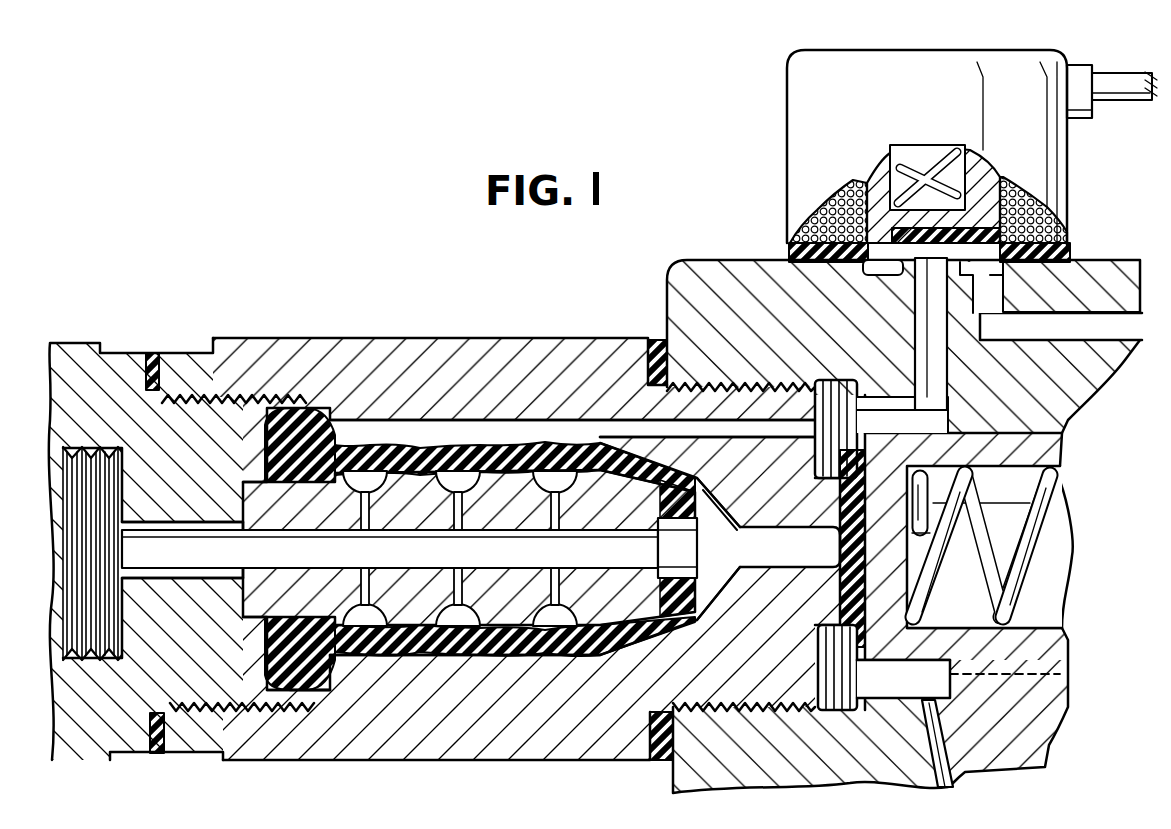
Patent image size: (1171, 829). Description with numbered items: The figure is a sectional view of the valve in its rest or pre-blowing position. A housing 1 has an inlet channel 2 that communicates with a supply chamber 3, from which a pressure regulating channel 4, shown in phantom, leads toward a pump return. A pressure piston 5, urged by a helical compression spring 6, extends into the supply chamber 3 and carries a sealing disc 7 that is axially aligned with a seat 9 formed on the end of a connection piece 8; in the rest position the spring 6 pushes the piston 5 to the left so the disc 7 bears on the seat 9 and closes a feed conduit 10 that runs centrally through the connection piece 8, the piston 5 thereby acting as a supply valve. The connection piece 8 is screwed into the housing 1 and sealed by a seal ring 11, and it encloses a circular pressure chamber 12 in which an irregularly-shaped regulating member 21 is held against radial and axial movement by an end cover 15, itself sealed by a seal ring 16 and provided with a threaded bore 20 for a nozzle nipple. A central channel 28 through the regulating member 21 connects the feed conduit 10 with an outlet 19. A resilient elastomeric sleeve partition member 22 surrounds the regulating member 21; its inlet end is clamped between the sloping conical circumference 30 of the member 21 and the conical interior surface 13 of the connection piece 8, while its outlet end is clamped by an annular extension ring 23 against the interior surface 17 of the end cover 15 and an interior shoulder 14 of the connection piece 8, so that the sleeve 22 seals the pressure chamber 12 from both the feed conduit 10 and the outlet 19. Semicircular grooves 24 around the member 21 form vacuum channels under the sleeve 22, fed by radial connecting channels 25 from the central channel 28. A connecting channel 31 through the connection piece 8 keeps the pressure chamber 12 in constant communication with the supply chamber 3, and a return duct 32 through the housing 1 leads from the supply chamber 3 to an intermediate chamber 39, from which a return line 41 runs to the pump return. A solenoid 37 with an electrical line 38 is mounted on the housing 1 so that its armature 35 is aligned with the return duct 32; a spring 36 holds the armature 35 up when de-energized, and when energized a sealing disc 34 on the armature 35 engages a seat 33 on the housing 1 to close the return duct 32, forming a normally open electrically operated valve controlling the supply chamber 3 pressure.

The housing 1 is at (747, 773).
The inlet channel 2 is at (953, 757).
The supply chamber 3 is at (937, 677).
The pressure regulating channel 4 is at (1060, 675).
The pressure piston 5 is at (1050, 640).
The helical compression spring 6 is at (1010, 590).
The sealing disc 7 is at (853, 497).
The connection piece 8 is at (740, 587).
The seat 9 is at (840, 603).
The feed conduit 10 is at (773, 550).
The seal ring 11 is at (663, 747).
The pressure chamber 12 is at (570, 667).
The sloping conical interior surface 13 is at (633, 647).
The interior shoulder 14 is at (323, 677).
The end cover 15 is at (205, 690).
The seal ring 16 is at (157, 754).
The interior surface 17 is at (267, 650).
The outlet 19 is at (152, 522).
The threaded bore 20 is at (80, 530).
The regulating member 21 is at (264, 507).
The sleeve partition member 22 is at (280, 403).
The annular extension ring 23 is at (282, 440).
The grooves 24 is at (345, 470).
The connecting channels 25 is at (357, 470).
The central channel 28 is at (412, 545).
The sloping conical circumference 30 is at (590, 442).
The connecting channel 31 is at (627, 423).
The return duct 32 is at (937, 340).
The seat 33 is at (880, 252).
The sealing disc 34 is at (1070, 240).
The armature 35 is at (983, 200).
The spring 36 is at (970, 152).
The solenoid 37 is at (1045, 117).
The electrical line 38 is at (1113, 90).
The intermediate chamber 39 is at (790, 243).
The return line 41 is at (1120, 327).